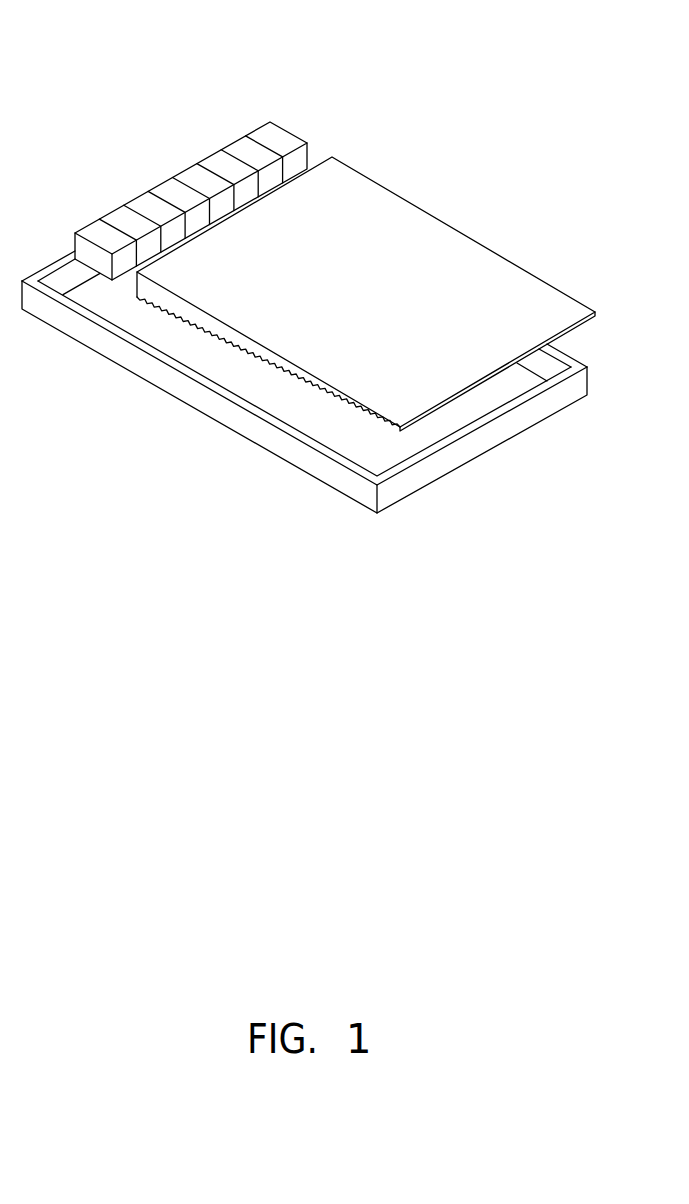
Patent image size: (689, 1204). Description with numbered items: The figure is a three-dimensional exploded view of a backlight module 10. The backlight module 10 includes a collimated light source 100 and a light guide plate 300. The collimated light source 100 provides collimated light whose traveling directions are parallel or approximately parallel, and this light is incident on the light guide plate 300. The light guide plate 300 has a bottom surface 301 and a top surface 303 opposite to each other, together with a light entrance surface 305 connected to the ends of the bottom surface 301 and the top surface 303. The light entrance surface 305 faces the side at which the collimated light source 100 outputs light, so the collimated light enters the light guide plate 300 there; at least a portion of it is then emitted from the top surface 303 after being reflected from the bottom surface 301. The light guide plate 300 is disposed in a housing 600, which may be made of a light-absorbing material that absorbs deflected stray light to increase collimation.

The backlight module 10 is at (83, 43).
The collimated light source 100 is at (283, 143).
The light guide plate 300 is at (393, 213).
The bottom surface 301 is at (233, 343).
The top surface 303 is at (503, 292).
The light entrance surface 305 is at (133, 285).
The housing 600 is at (493, 433).